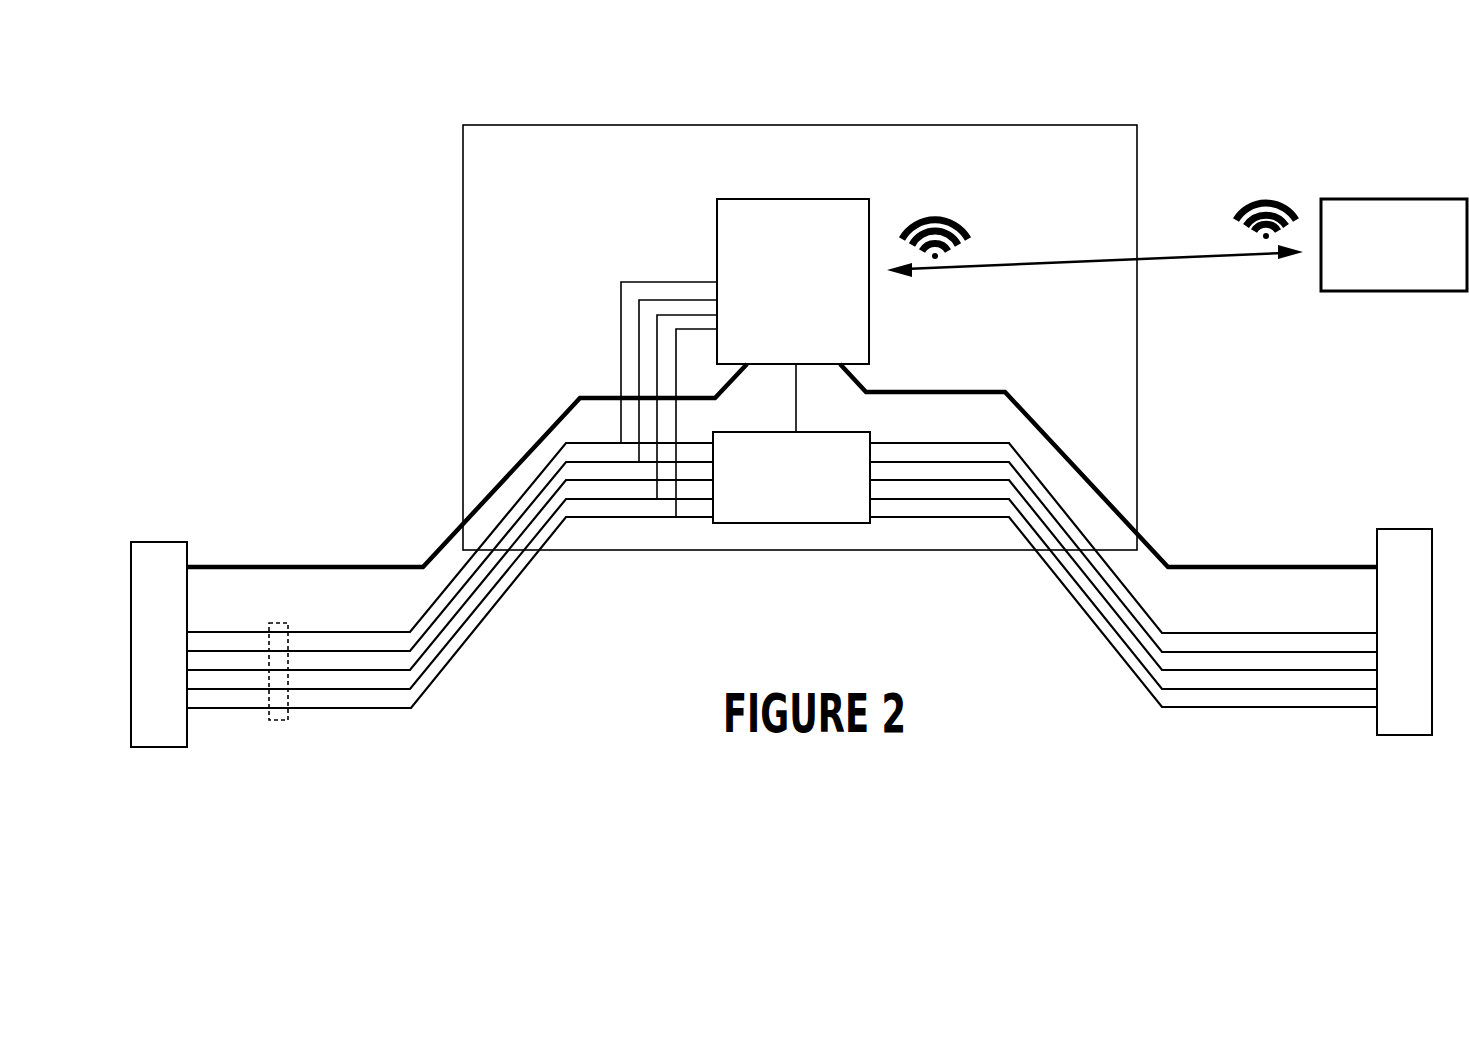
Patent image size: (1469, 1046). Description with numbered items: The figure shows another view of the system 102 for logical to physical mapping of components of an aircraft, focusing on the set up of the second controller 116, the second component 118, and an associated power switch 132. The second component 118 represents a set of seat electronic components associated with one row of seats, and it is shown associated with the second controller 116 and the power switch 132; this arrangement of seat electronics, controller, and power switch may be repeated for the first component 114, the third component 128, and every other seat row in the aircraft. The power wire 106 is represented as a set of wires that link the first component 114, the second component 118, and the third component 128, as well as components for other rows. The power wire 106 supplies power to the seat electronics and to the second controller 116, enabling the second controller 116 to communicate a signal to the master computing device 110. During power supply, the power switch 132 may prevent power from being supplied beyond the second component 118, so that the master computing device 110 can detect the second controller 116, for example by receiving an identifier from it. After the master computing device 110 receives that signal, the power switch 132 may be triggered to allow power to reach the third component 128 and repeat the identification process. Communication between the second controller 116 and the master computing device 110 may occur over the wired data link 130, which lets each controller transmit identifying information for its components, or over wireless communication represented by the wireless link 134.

The system 102 is at (297, 95).
The power wire 106 is at (280, 623).
The master computing device 110 is at (1393, 199).
The first component 114 is at (160, 542).
The second controller 116 is at (804, 199).
The second component 118 is at (545, 124).
The third component 128 is at (1395, 529).
The data link 130 is at (297, 567).
The power switch 132 is at (787, 523).
The wireless link 134 is at (1211, 252).